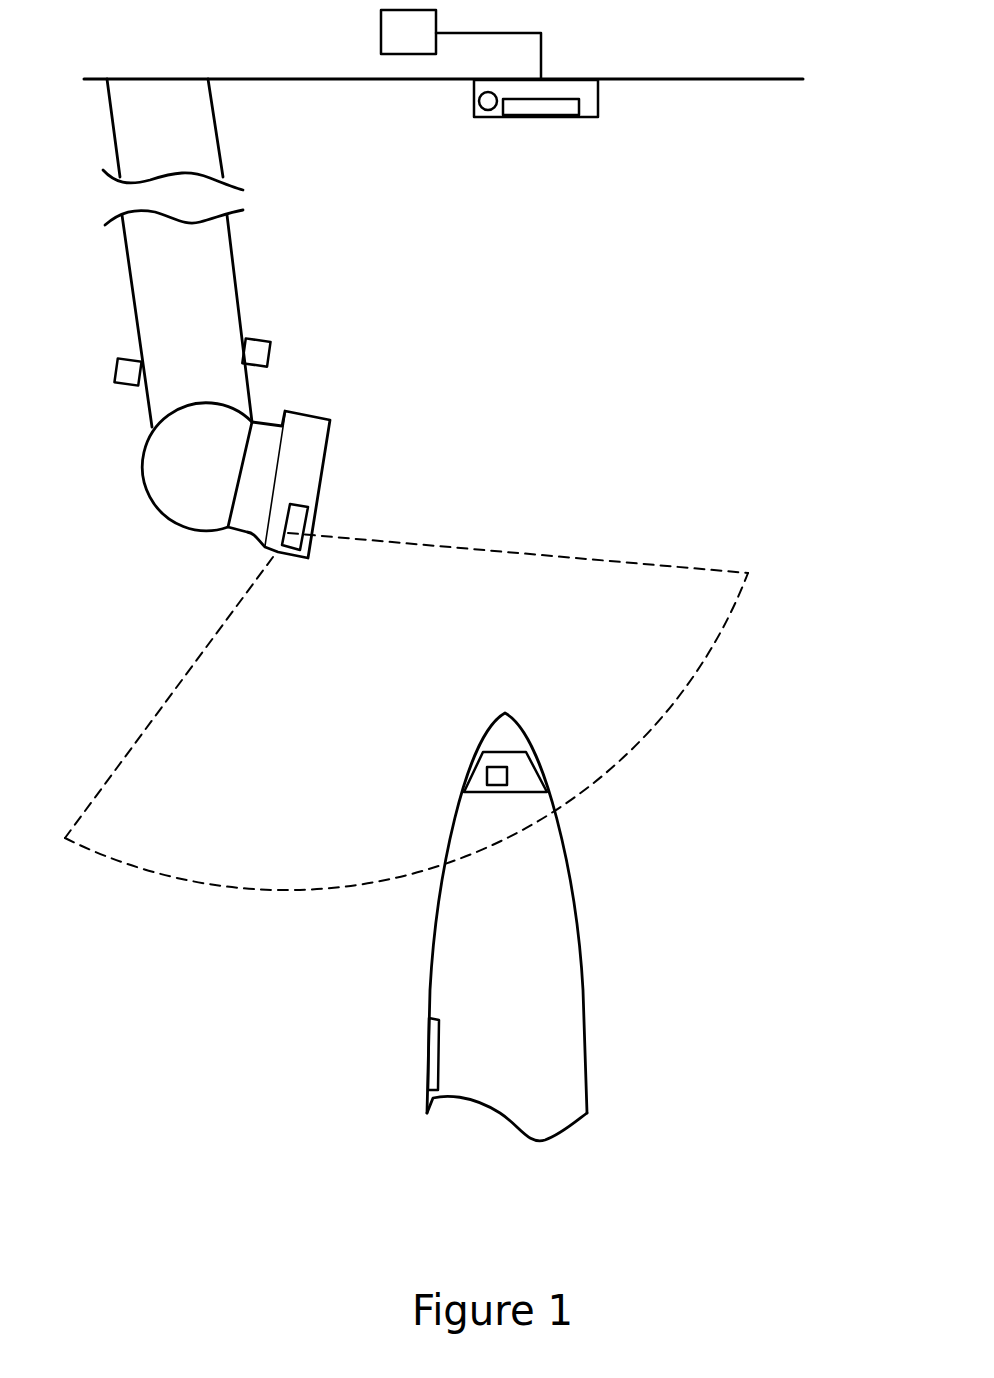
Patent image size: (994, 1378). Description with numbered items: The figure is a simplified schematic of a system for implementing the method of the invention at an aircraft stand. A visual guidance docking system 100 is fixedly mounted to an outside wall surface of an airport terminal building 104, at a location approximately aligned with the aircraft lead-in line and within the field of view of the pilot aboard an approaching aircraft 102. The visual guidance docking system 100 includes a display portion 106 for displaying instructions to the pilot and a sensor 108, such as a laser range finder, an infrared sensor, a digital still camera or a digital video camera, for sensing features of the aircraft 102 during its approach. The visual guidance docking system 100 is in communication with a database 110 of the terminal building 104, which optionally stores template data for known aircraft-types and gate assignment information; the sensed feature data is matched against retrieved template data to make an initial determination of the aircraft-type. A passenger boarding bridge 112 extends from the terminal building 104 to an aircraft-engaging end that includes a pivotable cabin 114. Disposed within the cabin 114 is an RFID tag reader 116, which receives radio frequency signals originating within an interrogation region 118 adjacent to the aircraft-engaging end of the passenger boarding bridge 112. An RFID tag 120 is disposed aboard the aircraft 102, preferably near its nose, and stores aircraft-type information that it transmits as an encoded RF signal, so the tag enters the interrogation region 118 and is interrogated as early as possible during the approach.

The visual guidance docking system 100 is at (598, 100).
The aircraft 102 is at (582, 950).
The airport terminal building 104 is at (750, 67).
The display portion 106 is at (540, 117).
The sensor 108 is at (488, 108).
The database 110 is at (397, 55).
The passenger boarding bridge 112 is at (352, 375).
The pivotable cabin 114 is at (330, 436).
The RFID tag reader 116 is at (303, 505).
The interrogation region 118 is at (615, 613).
The RFID tag 120 is at (507, 777).